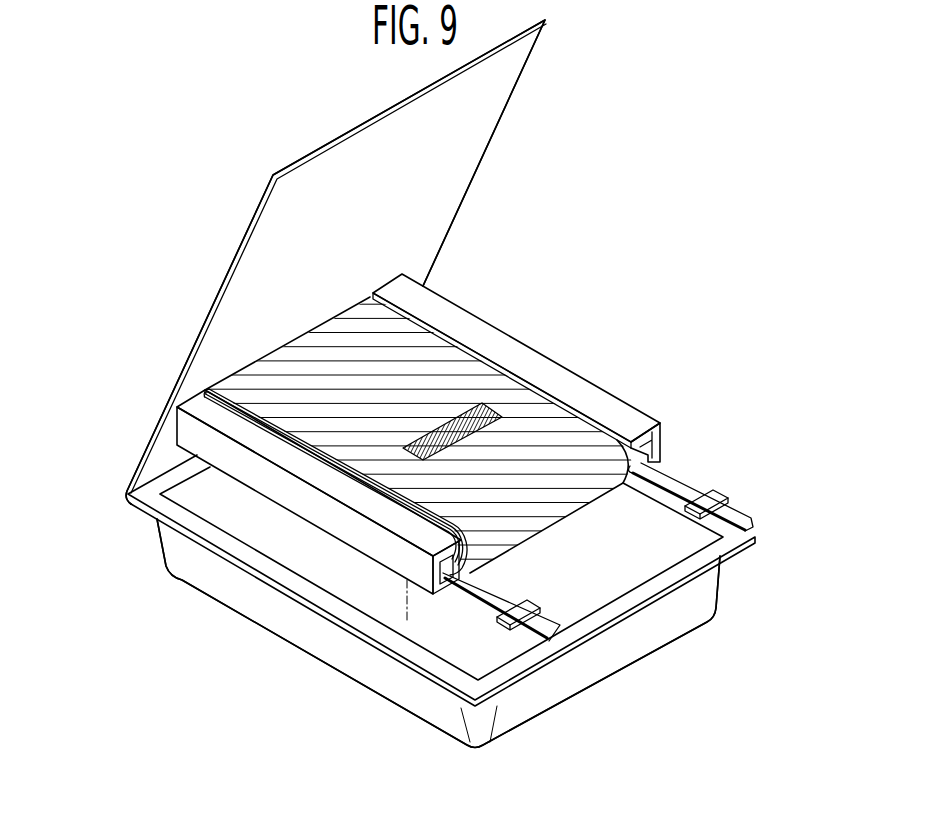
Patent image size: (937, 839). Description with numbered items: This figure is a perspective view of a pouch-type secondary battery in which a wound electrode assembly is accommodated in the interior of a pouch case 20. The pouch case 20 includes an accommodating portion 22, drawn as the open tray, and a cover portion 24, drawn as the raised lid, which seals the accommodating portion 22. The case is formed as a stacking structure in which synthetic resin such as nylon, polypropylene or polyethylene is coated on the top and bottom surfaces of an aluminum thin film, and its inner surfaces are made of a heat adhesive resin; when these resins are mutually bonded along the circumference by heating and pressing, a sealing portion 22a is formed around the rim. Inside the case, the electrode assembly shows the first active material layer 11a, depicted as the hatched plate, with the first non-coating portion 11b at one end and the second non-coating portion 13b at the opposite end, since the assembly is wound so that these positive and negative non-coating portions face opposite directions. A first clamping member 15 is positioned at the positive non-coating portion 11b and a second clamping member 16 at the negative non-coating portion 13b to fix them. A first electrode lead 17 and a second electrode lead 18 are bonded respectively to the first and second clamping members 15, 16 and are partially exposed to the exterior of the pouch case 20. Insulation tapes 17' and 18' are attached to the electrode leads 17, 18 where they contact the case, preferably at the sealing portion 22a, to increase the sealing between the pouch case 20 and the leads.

The first active material layer 11a is at (460, 368).
The first non-coating portion 11b is at (640, 452).
The second non-coating portion 13b is at (377, 473).
The first clamping member 15 is at (572, 383).
The second clamping member 16 is at (293, 462).
The first electrode lead 17 is at (732, 520).
The insulation tape 17' is at (740, 495).
The second electrode lead 18 is at (570, 629).
The insulation tape 18' is at (464, 680).
The pouch case 20 is at (67, 459).
The accommodating portion 22 is at (167, 540).
The sealing portion 22a is at (397, 641).
The cover portion 24 is at (138, 463).